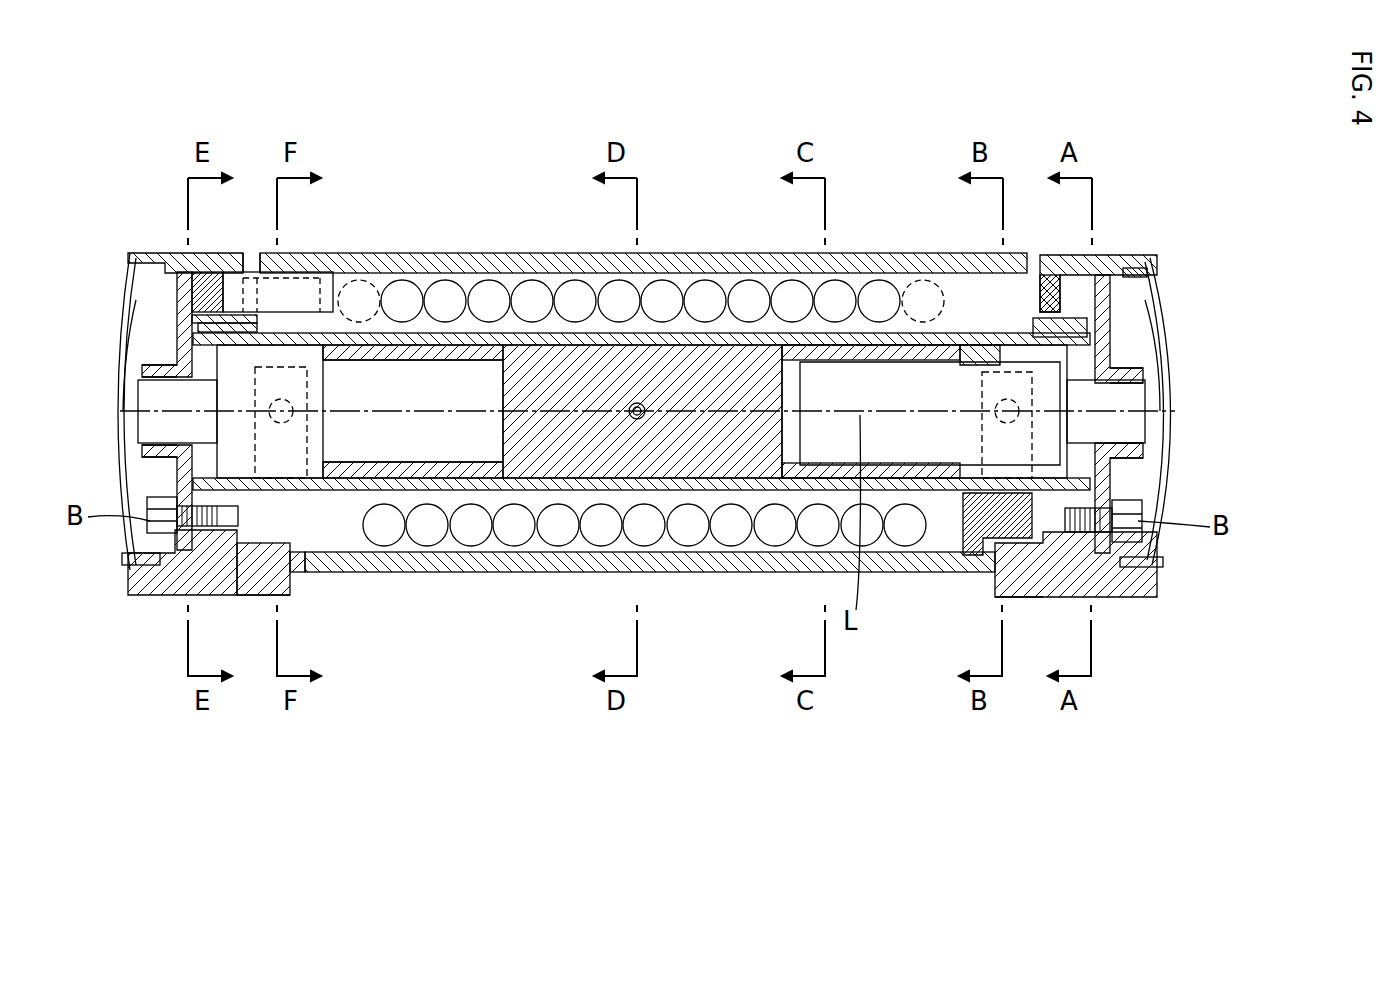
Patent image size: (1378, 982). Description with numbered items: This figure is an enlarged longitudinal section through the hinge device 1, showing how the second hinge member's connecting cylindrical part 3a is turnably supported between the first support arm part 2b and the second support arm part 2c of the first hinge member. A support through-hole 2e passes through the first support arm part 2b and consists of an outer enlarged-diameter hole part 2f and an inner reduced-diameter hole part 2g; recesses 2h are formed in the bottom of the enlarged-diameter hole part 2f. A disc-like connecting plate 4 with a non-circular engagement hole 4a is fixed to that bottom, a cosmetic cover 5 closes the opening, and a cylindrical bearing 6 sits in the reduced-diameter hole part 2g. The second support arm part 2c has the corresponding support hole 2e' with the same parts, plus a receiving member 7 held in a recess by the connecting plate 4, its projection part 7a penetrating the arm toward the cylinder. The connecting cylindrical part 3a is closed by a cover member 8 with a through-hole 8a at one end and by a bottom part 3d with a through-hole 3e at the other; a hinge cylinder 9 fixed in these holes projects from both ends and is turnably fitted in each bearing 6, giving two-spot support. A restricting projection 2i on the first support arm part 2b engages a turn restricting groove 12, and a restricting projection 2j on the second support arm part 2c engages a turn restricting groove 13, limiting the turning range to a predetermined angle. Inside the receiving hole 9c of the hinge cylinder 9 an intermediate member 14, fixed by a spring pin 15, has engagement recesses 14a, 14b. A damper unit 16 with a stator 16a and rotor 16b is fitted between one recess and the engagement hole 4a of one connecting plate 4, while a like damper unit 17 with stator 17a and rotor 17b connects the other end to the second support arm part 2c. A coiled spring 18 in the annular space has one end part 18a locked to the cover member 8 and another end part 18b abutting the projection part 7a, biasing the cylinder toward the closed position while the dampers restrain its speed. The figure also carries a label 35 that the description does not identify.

The hinge device 1 is at (906, 106).
The first support arm part 2b is at (1125, 262).
The second support arm part 2c is at (152, 262).
The support through-hole 2e is at (1180, 411).
The support hole 2e' is at (107, 411).
The enlarged-diameter hole part 2f is at (150, 553).
The reduced-diameter hole part 2g is at (180, 464).
The recesses 2h is at (1078, 318).
The restricting projection 2i is at (997, 592).
The restricting projection 2j is at (272, 596).
The connecting cylindrical part 3a is at (675, 262).
The bottom part 3d is at (252, 572).
The through-hole 3e is at (283, 586).
The connecting plate 4 is at (145, 490).
The engagement hole 4a is at (140, 385).
The cosmetic cover 5 is at (120, 352).
The bearing 6 is at (1052, 266).
The receiving member 7 is at (202, 270).
The projection part 7a is at (303, 270).
The cover member 8 is at (960, 522).
The through-hole 8a is at (975, 345).
The hinge cylinder 9 is at (507, 340).
The receiving hole 9c is at (382, 495).
The turn restricting groove 12 is at (1020, 562).
The turn restricting groove 13 is at (232, 532).
The intermediate member 14 is at (560, 472).
The engagement recess 14a is at (790, 440).
The engagement recess 14b is at (505, 440).
The spring pin 15 is at (642, 420).
The damper unit 16 is at (905, 356).
The stator 16a is at (870, 386).
The rotor 16b is at (1140, 404).
The damper unit 17 is at (375, 352).
The stator 17a is at (440, 375).
The rotor 17b is at (160, 431).
The coiled spring 18 is at (746, 292).
The one end part 18a is at (1020, 292).
The other end part 18b is at (331, 262).
The gap 35 is at (251, 262).